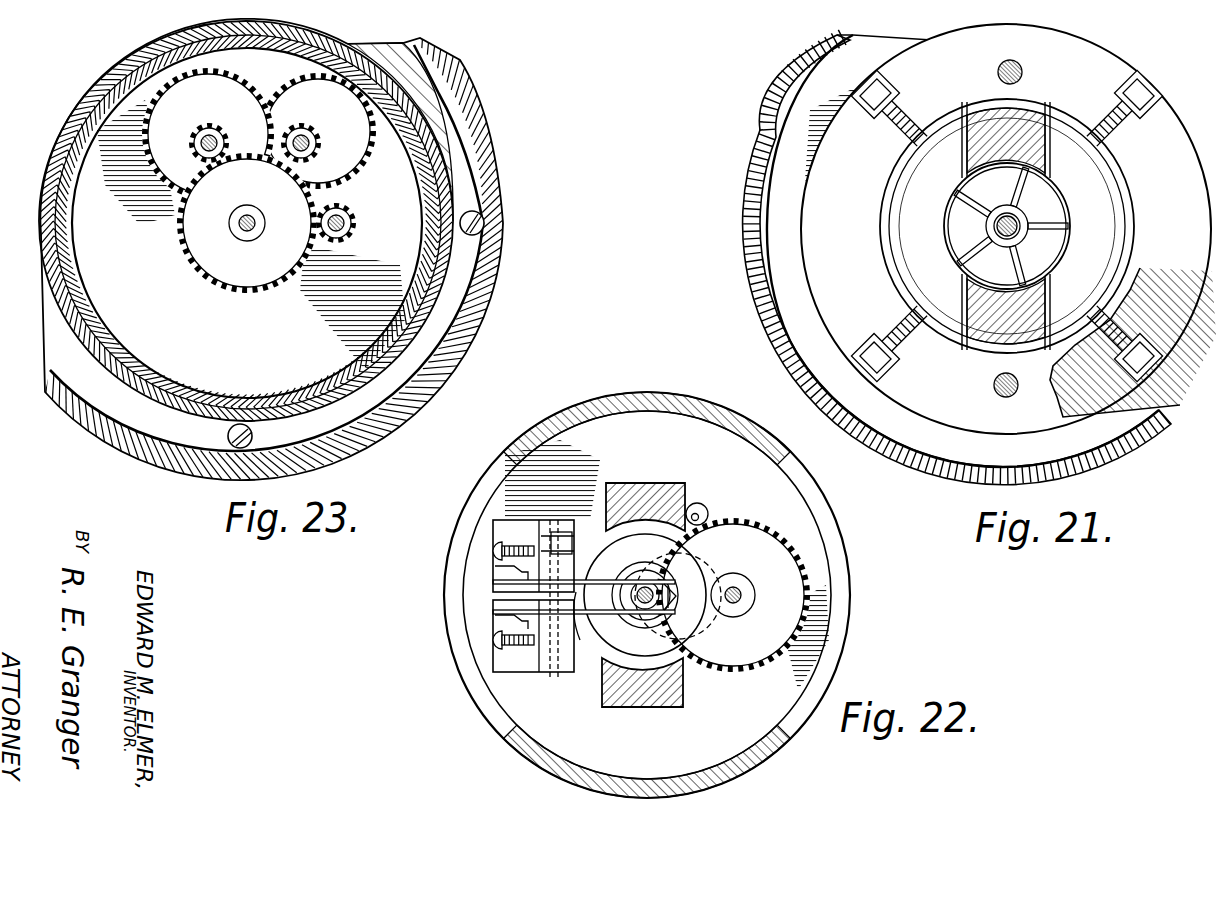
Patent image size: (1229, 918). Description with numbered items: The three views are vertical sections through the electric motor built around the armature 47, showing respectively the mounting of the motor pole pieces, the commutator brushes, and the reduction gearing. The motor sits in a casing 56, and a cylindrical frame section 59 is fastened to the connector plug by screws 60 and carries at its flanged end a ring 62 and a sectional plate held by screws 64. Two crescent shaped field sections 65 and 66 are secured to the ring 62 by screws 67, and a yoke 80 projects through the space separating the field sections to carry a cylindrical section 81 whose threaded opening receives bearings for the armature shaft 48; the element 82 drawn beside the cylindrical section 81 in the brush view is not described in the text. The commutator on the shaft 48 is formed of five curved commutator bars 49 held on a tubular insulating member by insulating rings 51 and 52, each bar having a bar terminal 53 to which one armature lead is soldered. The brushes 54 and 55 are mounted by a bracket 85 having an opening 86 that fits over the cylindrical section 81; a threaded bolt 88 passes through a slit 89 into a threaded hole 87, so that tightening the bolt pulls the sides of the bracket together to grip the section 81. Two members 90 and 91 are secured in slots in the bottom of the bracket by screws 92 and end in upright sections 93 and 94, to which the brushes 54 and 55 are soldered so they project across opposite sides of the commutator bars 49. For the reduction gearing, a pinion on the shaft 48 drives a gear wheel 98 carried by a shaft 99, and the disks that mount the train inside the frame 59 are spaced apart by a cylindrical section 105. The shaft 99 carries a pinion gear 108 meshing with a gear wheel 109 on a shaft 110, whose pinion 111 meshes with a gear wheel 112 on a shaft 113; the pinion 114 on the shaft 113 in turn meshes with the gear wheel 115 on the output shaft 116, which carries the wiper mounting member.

In FIG. 21, the armature 47 is at (1084, 210).
In FIG. 21, the armature shaft 48 is at (986, 226).
In FIG. 21, the commutator bars 49 is at (1010, 246).
In FIG. 21, the insulating ring 51 is at (1020, 220).
In FIG. 22, the insulating ring 52 is at (641, 622).
In FIG. 21, the bar terminals 53 is at (1018, 196).
In FIG. 22, the brush 54 is at (678, 600).
In FIG. 22, the brush 55 is at (675, 571).
In FIG. 23, the casing 56 is at (485, 325).
In FIG. 21, the casing 56 is at (778, 94).
In FIG. 23, the cylindrical frame section 59 is at (438, 153).
In FIG. 22, the cylindrical frame section 59 is at (682, 402).
In FIG. 23, the screws 60 is at (484, 223).
In FIG. 21, the ring 62 is at (1114, 61).
In FIG. 21, the screws 64 is at (1023, 70).
In FIG. 21, the field section 65 is at (902, 260).
In FIG. 21, the field section 66 is at (1118, 210).
In FIG. 21, the screws 67 is at (898, 80).
In FIG. 21, the yoke 80 is at (1031, 122).
In FIG. 22, the yoke 80 is at (675, 483).
In FIG. 22, the cylindrical section 81 is at (600, 560).
In FIG. 22, the shaft 82 is at (648, 624).
In FIG. 22, the bracket 85 is at (500, 524).
In FIG. 22, the opening 86 is at (717, 562).
In FIG. 22, the threaded hole 87 is at (557, 680).
In FIG. 22, the threaded bolt 88 is at (560, 533).
In FIG. 22, the slit 89 is at (580, 625).
In FIG. 22, the member 90 is at (493, 652).
In FIG. 22, the member 91 is at (493, 541).
In FIG. 22, the screws 92 is at (493, 549).
In FIG. 22, the upright section 93 is at (493, 628).
In FIG. 22, the upright section 94 is at (493, 568).
In FIG. 22, the gear wheel 98 is at (798, 580).
In FIG. 23, the shaft 99 is at (356, 224).
In FIG. 22, the shaft 99 is at (743, 596).
In FIG. 23, the cylindrical section 105 is at (430, 183).
In FIG. 23, the pinion gear 108 is at (352, 215).
In FIG. 23, the gear wheel 109 is at (323, 88).
In FIG. 23, the shaft 110 is at (318, 150).
In FIG. 23, the pinion 111 is at (318, 142).
In FIG. 23, the gear wheel 112 is at (240, 92).
In FIG. 23, the shaft 113 is at (224, 137).
In FIG. 23, the pinion 114 is at (192, 142).
In FIG. 23, the gear wheel 115 is at (253, 288).
In FIG. 23, the shaft 116 is at (245, 228).